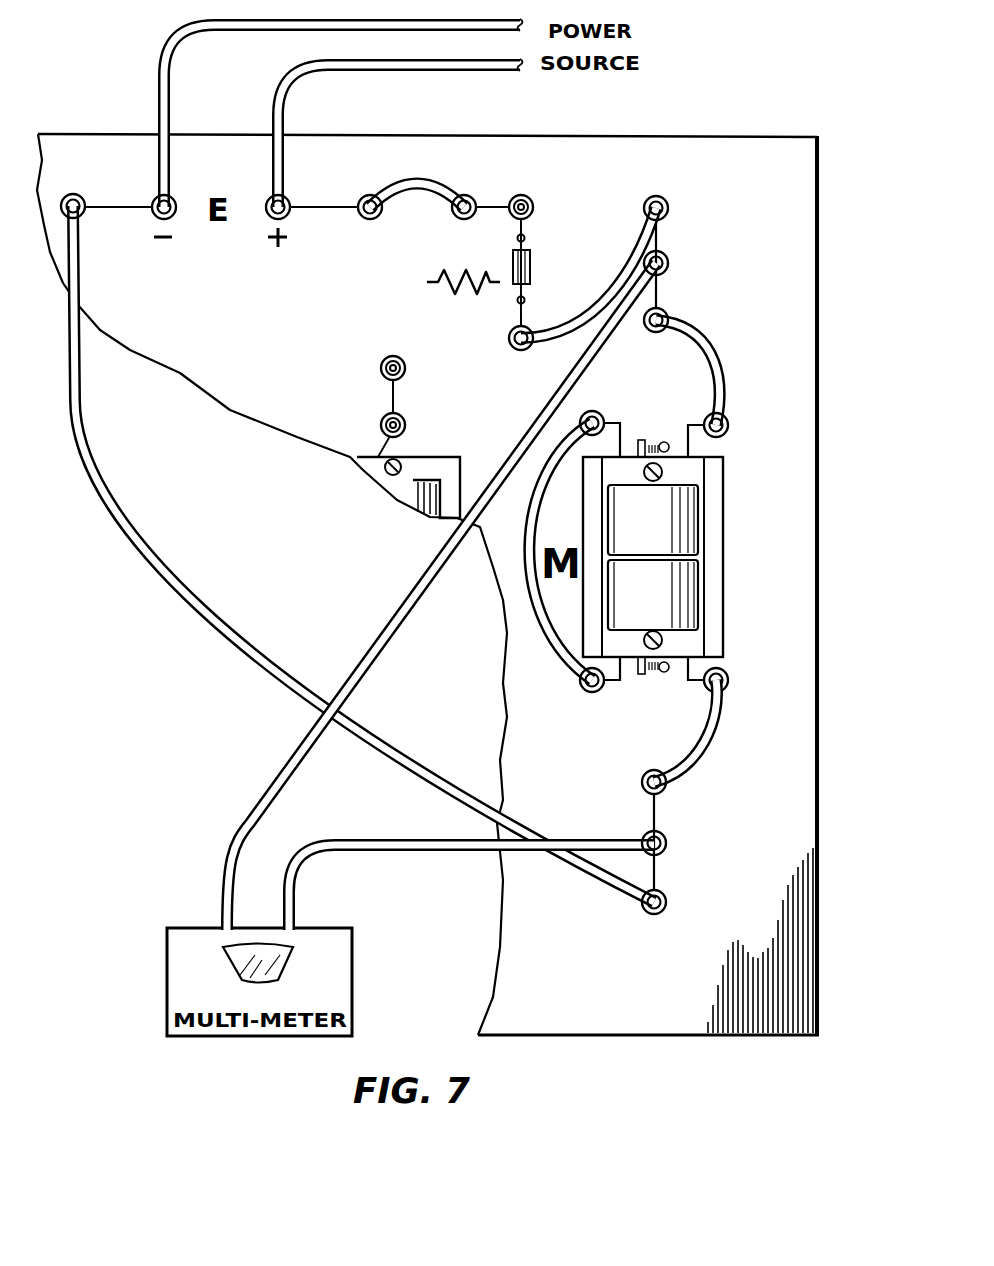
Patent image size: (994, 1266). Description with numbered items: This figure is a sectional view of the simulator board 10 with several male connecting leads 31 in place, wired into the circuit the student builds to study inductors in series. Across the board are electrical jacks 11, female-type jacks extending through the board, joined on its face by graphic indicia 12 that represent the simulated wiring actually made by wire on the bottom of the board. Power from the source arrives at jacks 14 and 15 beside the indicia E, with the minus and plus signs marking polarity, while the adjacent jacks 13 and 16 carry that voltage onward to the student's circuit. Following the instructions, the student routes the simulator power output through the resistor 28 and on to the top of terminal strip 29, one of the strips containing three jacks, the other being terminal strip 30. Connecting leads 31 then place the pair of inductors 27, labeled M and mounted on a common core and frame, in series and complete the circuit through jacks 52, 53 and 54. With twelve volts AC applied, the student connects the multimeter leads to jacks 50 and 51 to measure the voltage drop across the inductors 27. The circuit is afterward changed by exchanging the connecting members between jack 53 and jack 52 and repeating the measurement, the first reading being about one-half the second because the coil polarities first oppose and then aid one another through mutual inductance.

The simulator board 10 is at (729, 128).
The electrical jacks 11 is at (531, 197).
The graphic indicia 12 is at (112, 210).
The jack 13 is at (78, 193).
The jack 14 is at (172, 195).
The jack 15 is at (286, 195).
The jack 16 is at (365, 220).
The pair of inductors 27 is at (724, 527).
The resistor 28 is at (532, 266).
The terminal strip 29 is at (708, 184).
The terminal strip 30 is at (654, 766).
The connecting leads 31 is at (418, 192).
The jack 50 is at (669, 266).
The jack 51 is at (667, 845).
The jack 52 is at (597, 412).
The jack 53 is at (730, 428).
The terminal 54 is at (650, 332).